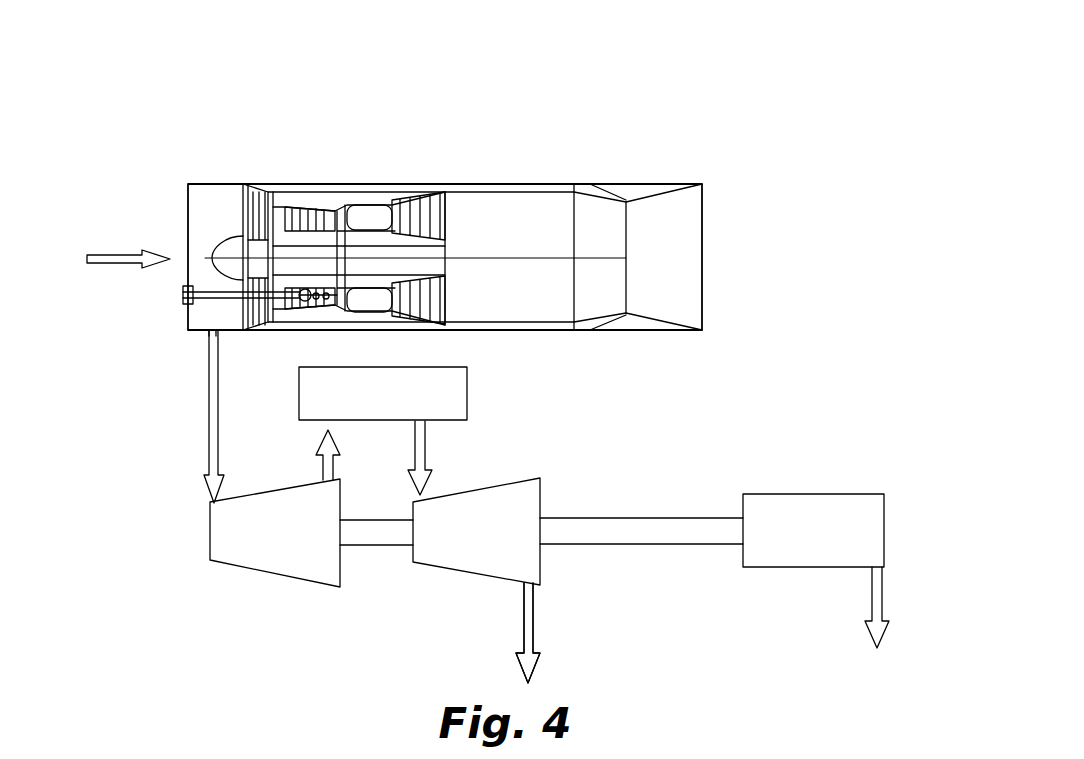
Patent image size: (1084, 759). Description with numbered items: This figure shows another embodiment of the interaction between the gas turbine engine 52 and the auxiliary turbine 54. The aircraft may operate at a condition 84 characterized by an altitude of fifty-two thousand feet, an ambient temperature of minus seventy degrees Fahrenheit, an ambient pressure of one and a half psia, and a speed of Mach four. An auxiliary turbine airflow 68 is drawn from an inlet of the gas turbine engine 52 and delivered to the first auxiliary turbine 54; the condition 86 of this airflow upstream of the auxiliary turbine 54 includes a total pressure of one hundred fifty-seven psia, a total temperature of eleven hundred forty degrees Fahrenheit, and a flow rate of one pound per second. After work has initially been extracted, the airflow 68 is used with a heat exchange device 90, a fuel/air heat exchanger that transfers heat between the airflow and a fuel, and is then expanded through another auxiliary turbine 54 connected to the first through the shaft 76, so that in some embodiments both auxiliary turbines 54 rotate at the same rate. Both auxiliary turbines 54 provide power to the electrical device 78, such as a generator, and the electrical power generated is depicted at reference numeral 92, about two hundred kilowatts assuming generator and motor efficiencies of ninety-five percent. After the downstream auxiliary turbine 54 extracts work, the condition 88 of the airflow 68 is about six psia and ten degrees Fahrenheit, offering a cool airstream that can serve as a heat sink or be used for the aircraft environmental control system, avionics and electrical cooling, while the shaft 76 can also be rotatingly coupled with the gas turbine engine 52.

The gas turbine engine 52 is at (497, 100).
The condition 84 is at (108, 250).
The condition 86 is at (207, 384).
The auxiliary turbine airflow 68 is at (220, 452).
The heat exchange device 90 is at (468, 398).
The auxiliary turbine 54 is at (258, 576).
The shaft 76 is at (375, 518).
The electrical device 78 is at (800, 492).
The condition 88 is at (533, 601).
The electrical power generated 92 is at (868, 594).